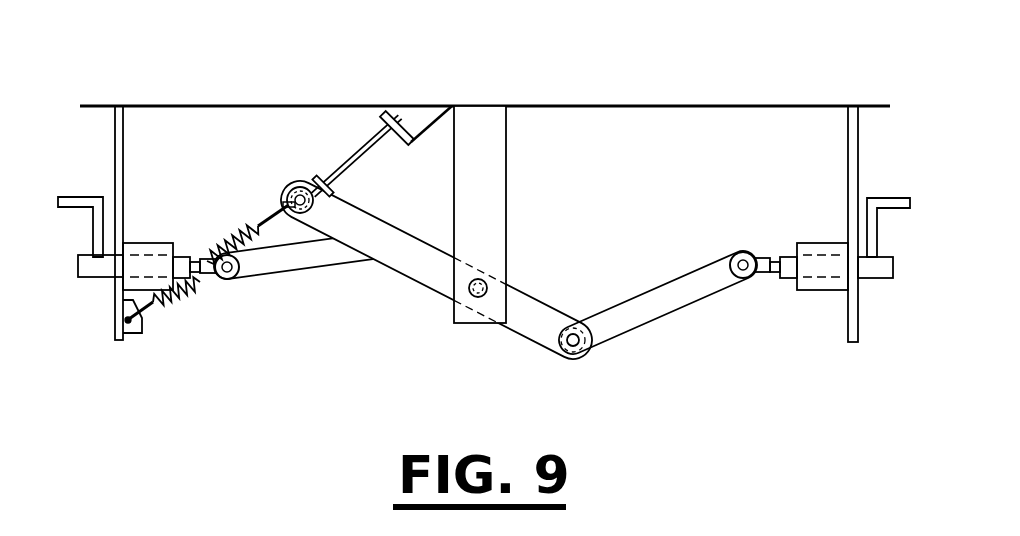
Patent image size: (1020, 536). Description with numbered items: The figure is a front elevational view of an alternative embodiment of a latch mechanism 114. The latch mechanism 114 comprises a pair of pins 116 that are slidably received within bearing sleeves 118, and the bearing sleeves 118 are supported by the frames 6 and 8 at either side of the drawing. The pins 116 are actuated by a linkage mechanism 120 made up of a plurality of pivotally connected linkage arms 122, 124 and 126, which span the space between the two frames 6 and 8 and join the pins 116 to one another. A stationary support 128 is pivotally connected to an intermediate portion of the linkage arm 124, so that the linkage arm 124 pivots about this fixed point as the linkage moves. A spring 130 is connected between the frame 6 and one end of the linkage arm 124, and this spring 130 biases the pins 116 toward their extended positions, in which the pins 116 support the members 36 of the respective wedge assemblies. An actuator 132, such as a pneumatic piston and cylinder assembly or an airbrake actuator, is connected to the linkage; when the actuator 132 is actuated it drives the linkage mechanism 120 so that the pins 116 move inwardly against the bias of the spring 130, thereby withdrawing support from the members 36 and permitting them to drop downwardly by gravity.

The frame 6 is at (123, 148).
The frame 8 is at (848, 150).
The member 36 is at (83, 197).
The latch mechanism 114 is at (288, 134).
The pin 116 is at (92, 276).
The bearing sleeve 118 is at (150, 243).
The linkage mechanism 120 is at (416, 294).
The linkage arm 122 is at (302, 272).
The linkage arm 124 is at (530, 327).
The linkage arm 126 is at (668, 304).
The stationary support 128 is at (497, 203).
The spring 130 is at (180, 293).
The actuator 132 is at (413, 110).